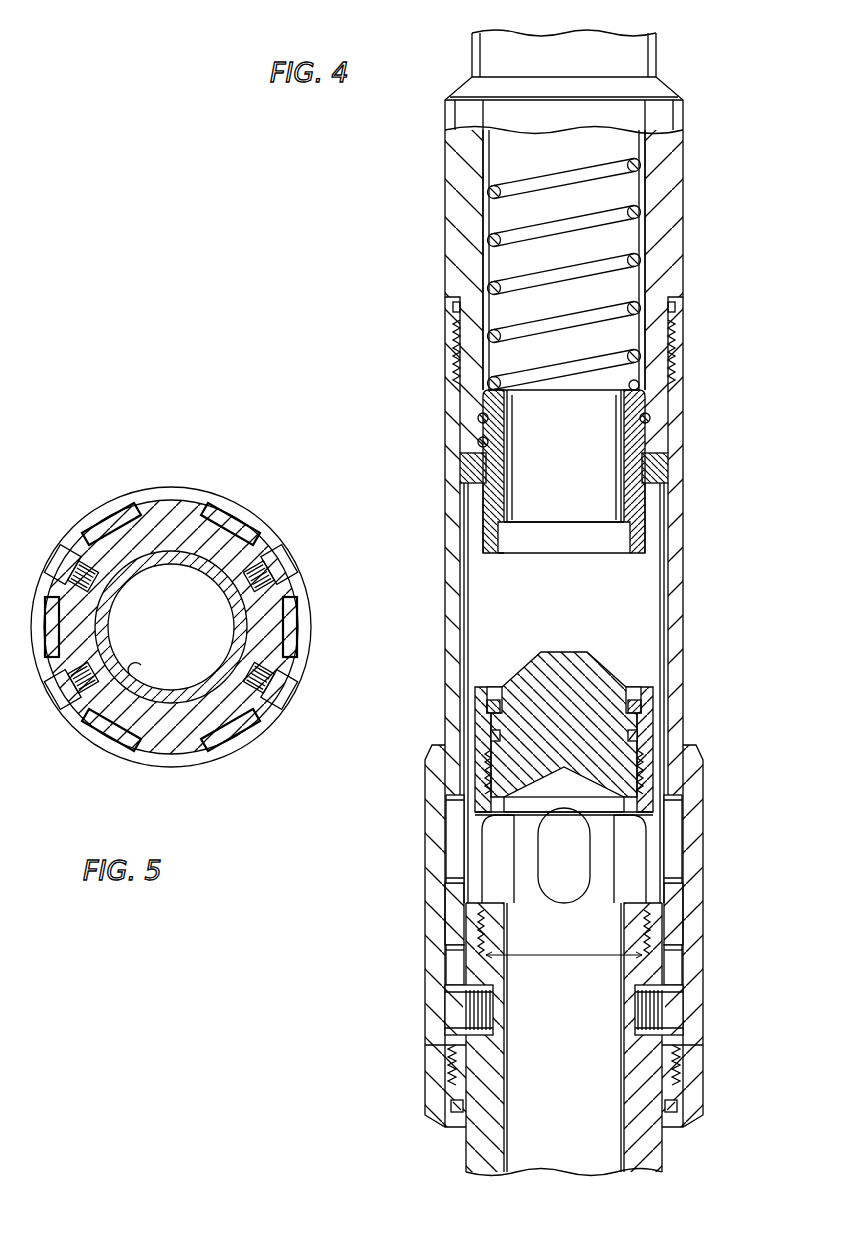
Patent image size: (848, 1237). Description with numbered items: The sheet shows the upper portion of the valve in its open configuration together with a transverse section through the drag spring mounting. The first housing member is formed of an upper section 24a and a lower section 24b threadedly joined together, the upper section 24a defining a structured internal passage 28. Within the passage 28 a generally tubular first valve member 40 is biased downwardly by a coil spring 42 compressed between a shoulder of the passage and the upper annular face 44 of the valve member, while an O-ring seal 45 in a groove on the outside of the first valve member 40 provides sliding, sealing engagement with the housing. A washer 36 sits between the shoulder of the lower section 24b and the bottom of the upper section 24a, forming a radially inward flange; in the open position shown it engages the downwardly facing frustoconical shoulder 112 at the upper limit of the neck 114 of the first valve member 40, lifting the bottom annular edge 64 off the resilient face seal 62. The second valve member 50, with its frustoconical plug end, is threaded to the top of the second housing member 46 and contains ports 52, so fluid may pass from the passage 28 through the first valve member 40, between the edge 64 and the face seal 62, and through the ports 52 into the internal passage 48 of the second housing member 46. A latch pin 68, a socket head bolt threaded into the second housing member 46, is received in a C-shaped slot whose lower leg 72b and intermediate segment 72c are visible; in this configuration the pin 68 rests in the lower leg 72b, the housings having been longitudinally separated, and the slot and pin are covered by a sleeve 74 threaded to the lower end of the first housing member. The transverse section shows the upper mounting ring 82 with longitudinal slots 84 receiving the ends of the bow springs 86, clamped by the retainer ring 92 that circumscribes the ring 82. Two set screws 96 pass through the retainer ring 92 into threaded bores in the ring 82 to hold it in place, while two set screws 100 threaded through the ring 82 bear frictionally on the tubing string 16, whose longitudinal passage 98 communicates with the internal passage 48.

In FIG. 4, the upper section 24a is at (677, 161).
In FIG. 4, the lower section 24b is at (677, 588).
In FIG. 4, the internal passage 28 is at (486, 255).
In FIG. 4, the coil spring 42 is at (612, 217).
In FIG. 4, the upper annular face 44 is at (646, 398).
In FIG. 4, the O-ring seal 45 is at (648, 422).
In FIG. 4, the frustoconical shoulder 112 is at (486, 443).
In FIG. 4, the washer 36 is at (666, 475).
In FIG. 4, the first valve member 40 is at (640, 503).
In FIG. 4, the neck 114 is at (490, 507).
In FIG. 4, the bottom annular edge 64 is at (496, 553).
In FIG. 4, the face seal 62 is at (635, 703).
In FIG. 4, the second valve member 50 is at (612, 752).
In FIG. 4, the ports 52 is at (653, 820).
In FIG. 4, the intermediate segment 72c is at (668, 855).
In FIG. 4, the lower leg 72b is at (672, 962).
In FIG. 4, the pin 68 is at (670, 1015).
In FIG. 4, the sleeve 74 is at (688, 1075).
In FIG. 4, the second housing member 46 is at (647, 1152).
In FIG. 4, the internal passage 48 is at (505, 1143).
In FIG. 5, the retainer ring 92 is at (168, 486).
In FIG. 5, the tubing string 16 is at (237, 615).
In FIG. 5, the slots 84 is at (290, 645).
In FIG. 5, the bow springs 86 is at (105, 510).
In FIG. 5, the longitudinal passage 98 is at (92, 718).
In FIG. 5, the upper mounting ring 82 is at (223, 718).
In FIG. 5, the set screws 96 is at (280, 560).
In FIG. 5, the set screws 100 is at (260, 683).